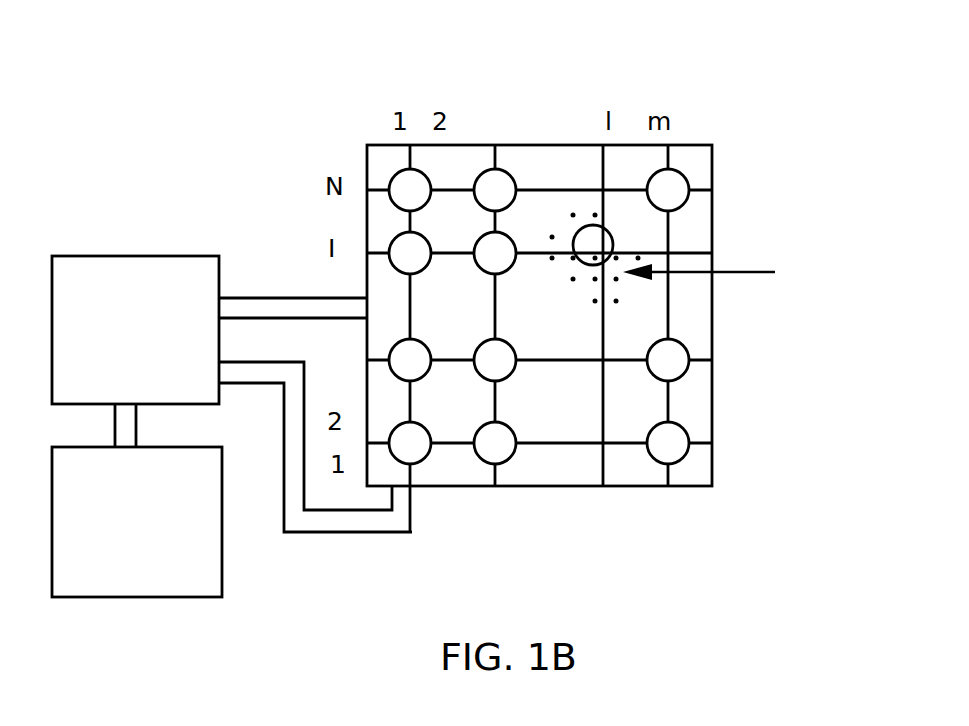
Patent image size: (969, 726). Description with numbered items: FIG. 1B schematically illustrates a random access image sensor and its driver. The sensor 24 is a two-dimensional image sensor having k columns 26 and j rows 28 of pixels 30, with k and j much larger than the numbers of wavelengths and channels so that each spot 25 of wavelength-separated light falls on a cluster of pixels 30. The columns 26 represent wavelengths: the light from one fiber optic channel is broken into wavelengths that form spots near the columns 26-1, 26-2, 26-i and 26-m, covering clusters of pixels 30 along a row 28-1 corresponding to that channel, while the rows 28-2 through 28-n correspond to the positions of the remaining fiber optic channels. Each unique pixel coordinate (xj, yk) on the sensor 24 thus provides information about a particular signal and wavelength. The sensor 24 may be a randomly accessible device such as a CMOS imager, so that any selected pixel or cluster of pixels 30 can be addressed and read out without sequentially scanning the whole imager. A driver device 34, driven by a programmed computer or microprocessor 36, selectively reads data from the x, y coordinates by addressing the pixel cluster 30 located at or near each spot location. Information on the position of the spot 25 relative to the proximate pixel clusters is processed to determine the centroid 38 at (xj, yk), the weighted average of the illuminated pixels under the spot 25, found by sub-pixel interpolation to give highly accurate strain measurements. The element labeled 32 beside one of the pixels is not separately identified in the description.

The image sensor 24 is at (562, 487).
The spot 25 is at (602, 249).
The columns 26 is at (612, 313).
The first column 26-1 is at (412, 313).
The second column 26-2 is at (497, 313).
The i-th column 26-i is at (605, 155).
The m-th column 26-m is at (657, 327).
The rows 28 is at (551, 329).
The first row 28-1 is at (712, 442).
The second row 28-2 is at (712, 360).
The n-th row 28-n is at (712, 185).
The pixels 30 is at (727, 265).
The pixel electrodes 32 is at (539, 316).
The driver device 34 is at (232, 394).
The microprocessor 36 is at (137, 500).
The centroid 38 is at (598, 238).